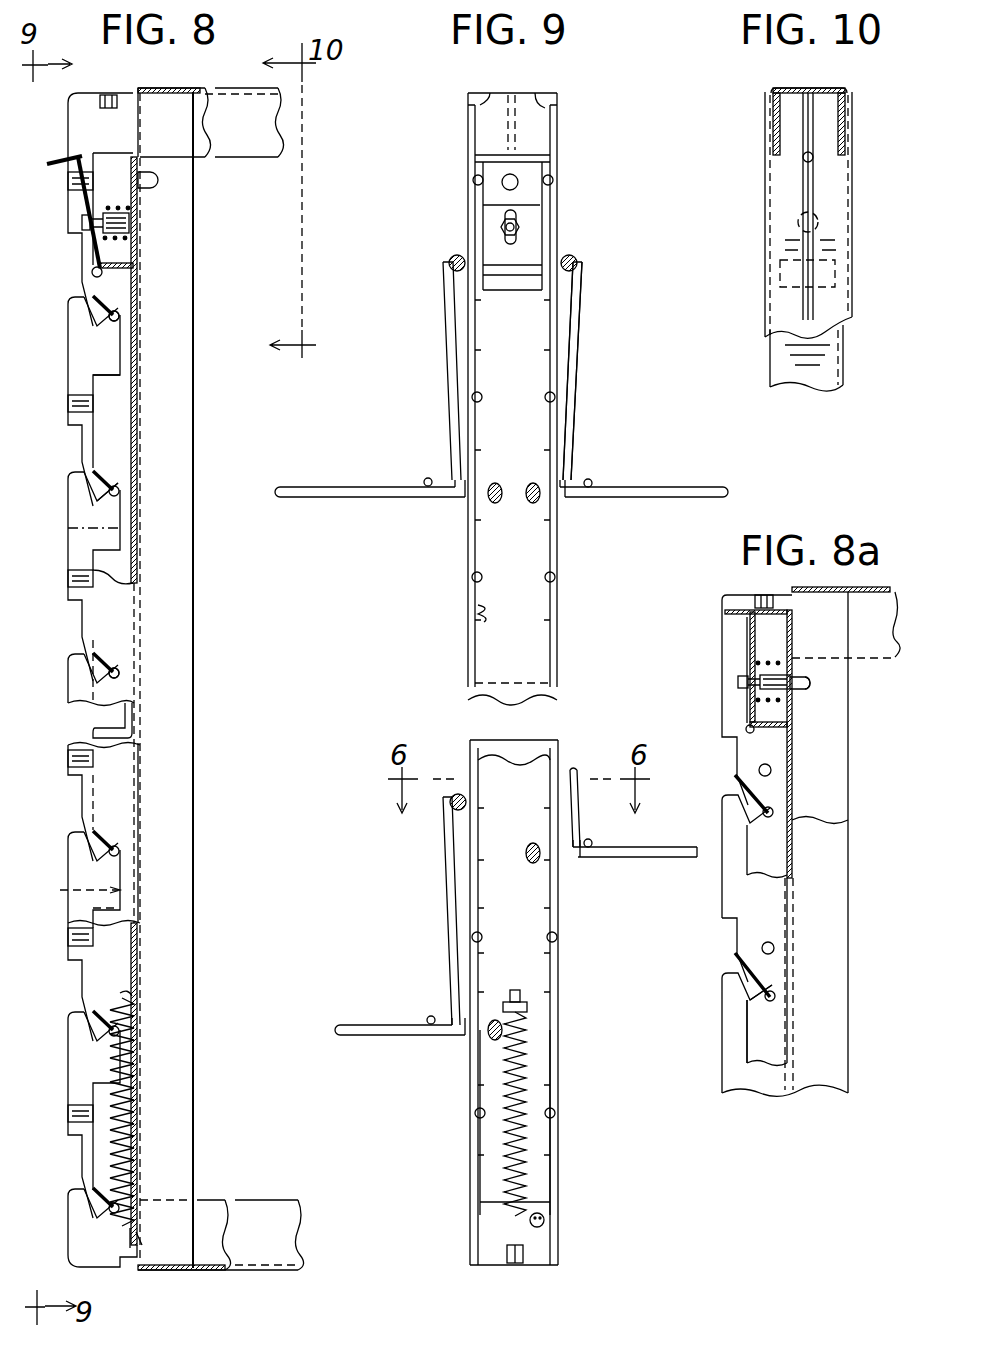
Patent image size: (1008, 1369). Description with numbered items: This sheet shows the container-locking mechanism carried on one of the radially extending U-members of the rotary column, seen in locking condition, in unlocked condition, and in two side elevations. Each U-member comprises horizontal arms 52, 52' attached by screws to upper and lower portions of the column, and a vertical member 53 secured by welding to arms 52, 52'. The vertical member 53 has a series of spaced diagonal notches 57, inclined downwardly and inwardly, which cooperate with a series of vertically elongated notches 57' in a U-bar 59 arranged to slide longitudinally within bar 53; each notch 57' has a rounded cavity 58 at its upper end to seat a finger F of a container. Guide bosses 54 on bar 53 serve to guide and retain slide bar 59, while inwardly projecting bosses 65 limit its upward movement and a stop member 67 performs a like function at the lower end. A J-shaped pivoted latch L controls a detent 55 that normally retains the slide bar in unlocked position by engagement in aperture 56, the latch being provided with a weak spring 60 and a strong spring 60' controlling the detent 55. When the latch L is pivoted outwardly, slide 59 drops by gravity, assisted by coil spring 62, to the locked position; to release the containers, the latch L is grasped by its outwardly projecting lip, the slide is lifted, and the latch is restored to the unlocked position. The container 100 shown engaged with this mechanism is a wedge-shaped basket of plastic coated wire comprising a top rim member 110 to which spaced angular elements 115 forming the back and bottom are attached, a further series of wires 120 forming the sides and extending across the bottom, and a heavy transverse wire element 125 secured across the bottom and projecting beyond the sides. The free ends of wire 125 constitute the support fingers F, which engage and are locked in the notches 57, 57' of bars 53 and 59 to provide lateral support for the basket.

In FIG. 8, the horizontal arm 52 is at (234, 678).
In FIG. 10, the horizontal arm 52 is at (821, 101).
In FIG. 8A, the horizontal arm 52 is at (846, 840).
In FIG. 8, the horizontal arm 52' is at (221, 1213).
In FIG. 8, the vertical member 53 is at (140, 440).
In FIG. 9, the vertical member 53 is at (456, 672).
In FIG. 10, the vertical member 53 is at (755, 305).
In FIG. 8A, the vertical member 53 is at (714, 1006).
In FIG. 8, the guide bosses 54 is at (75, 192).
In FIG. 9, the guide bosses 54 is at (478, 172).
In FIG. 8, the detent 55 is at (82, 222).
In FIG. 9, the detent 55 is at (500, 228).
In FIG. 8A, the detent 55 is at (740, 682).
In FIG. 8, the aperture 56 is at (158, 181).
In FIG. 9, the aperture 56 is at (486, 200).
In FIG. 8A, the aperture 56 is at (812, 680).
In FIG. 8, the diagonal notches 57 is at (67, 739).
In FIG. 8A, the diagonal notches 57 is at (720, 883).
In FIG. 8, the vertically elongated notches 57' is at (67, 620).
In FIG. 8A, the vertically elongated notches 57' is at (827, 857).
In FIG. 8, the rounded cavity 58 is at (118, 490).
In FIG. 8A, the rounded cavity 58 is at (772, 955).
In FIG. 8, the U-bar slide 59 is at (83, 383).
In FIG. 9, the U-bar slide 59 is at (483, 610).
In FIG. 10, the U-bar slide 59 is at (858, 363).
In FIG. 8A, the U-bar slide 59 is at (737, 1045).
In FIG. 8, the weak spring 60 is at (115, 193).
In FIG. 10, the weak spring 60 is at (764, 192).
In FIG. 8A, the weak spring 60 is at (728, 657).
In FIG. 8, the strong spring 60' is at (145, 215).
In FIG. 8A, the strong spring 60' is at (728, 713).
In FIG. 8, the coil spring 62 is at (120, 1065).
In FIG. 9, the coil spring 62 is at (520, 1140).
In FIG. 8, the bosses 65 is at (100, 102).
In FIG. 9, the bosses 65 is at (522, 108).
In FIG. 8A, the bosses 65 is at (763, 595).
In FIG. 8, the stop member 67 is at (62, 1250).
In FIG. 9, the stop member 67 is at (545, 1215).
In FIG. 9, the container 100 is at (438, 378).
In FIG. 9, the top rim member 110 is at (574, 258).
In FIG. 9, the angular elements 115 is at (590, 480).
In FIG. 9, the wires 120 is at (580, 325).
In FIG. 9, the transverse wire element 125 is at (372, 498).
In FIG. 8, the latch L is at (63, 152).
In FIG. 9, the latch L is at (522, 203).
In FIG. 8A, the latch L is at (739, 637).
In FIG. 8, the support fingers F is at (118, 318).
In FIG. 9, the support fingers F is at (460, 498).